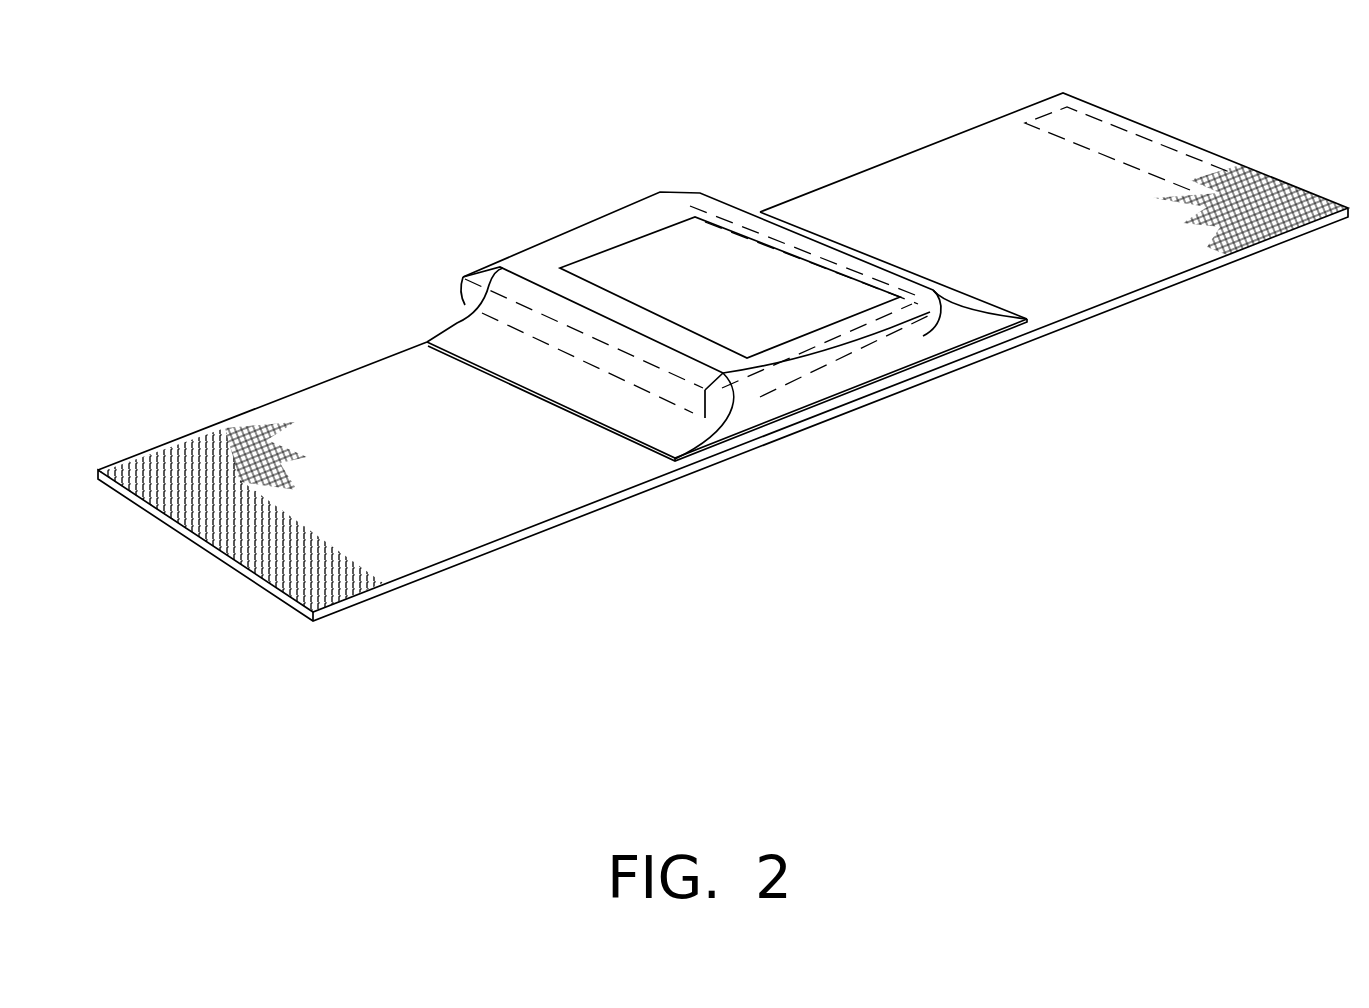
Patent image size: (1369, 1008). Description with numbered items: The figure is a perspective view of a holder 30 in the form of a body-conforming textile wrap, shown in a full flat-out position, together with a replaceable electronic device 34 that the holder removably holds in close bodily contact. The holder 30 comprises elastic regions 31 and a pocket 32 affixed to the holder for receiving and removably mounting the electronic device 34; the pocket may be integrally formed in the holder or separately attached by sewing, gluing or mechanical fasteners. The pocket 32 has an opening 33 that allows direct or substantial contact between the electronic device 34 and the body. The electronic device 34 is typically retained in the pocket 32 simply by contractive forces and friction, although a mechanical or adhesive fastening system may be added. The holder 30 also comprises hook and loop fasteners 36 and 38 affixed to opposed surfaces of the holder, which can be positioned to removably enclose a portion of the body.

The holder 30 is at (620, 620).
The elastic regions 31 is at (397, 378).
The pocket 32 is at (470, 340).
The opening 33 is at (752, 243).
The electronic device 34 is at (600, 213).
The hook and loop fastener 36 is at (153, 445).
The hook and loop fastener 38 is at (1193, 142).